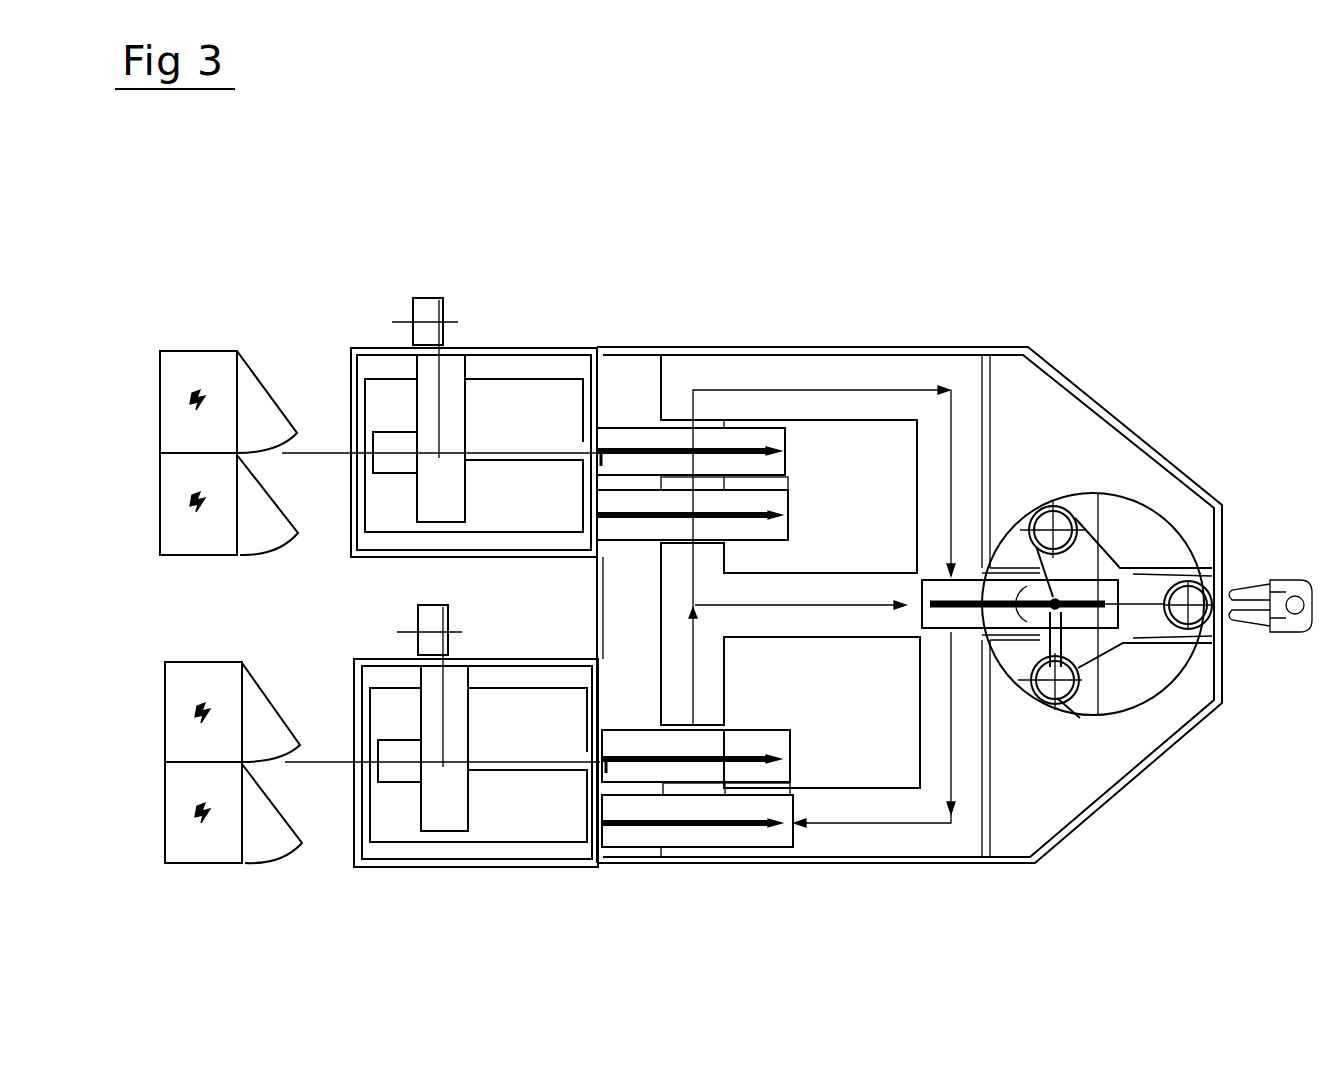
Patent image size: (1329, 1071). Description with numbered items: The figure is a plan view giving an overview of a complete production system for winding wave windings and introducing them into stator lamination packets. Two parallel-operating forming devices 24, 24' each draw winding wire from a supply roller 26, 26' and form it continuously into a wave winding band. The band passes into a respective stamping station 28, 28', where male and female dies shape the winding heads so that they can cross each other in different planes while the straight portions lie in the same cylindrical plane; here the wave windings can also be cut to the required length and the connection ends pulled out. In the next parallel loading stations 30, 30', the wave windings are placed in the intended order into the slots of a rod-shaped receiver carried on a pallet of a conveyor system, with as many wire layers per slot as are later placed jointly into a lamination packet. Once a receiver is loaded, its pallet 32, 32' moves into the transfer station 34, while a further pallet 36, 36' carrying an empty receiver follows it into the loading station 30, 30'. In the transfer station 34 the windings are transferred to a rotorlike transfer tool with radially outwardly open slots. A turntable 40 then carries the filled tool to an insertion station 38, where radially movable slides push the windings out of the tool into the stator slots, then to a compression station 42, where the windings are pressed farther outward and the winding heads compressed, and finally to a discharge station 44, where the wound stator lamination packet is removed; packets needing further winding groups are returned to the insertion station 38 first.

The forming device 24 is at (471, 325).
The forming device 24' is at (444, 771).
The supply roller 26 is at (419, 240).
The supply roller 26' is at (406, 624).
The stamping station 28 is at (479, 342).
The stamping station 28' is at (476, 797).
The loading station 30 is at (689, 297).
The loading station 30' is at (691, 847).
The pallet 32 is at (702, 316).
The pallet 32' is at (760, 829).
The transfer station 34 is at (972, 610).
The pallet 36 is at (752, 344).
The pallet 36' is at (712, 862).
The insertion station 38 is at (1073, 705).
The turntable 40 is at (1090, 653).
The compression station 42 is at (1053, 543).
The discharge station 44 is at (1190, 583).